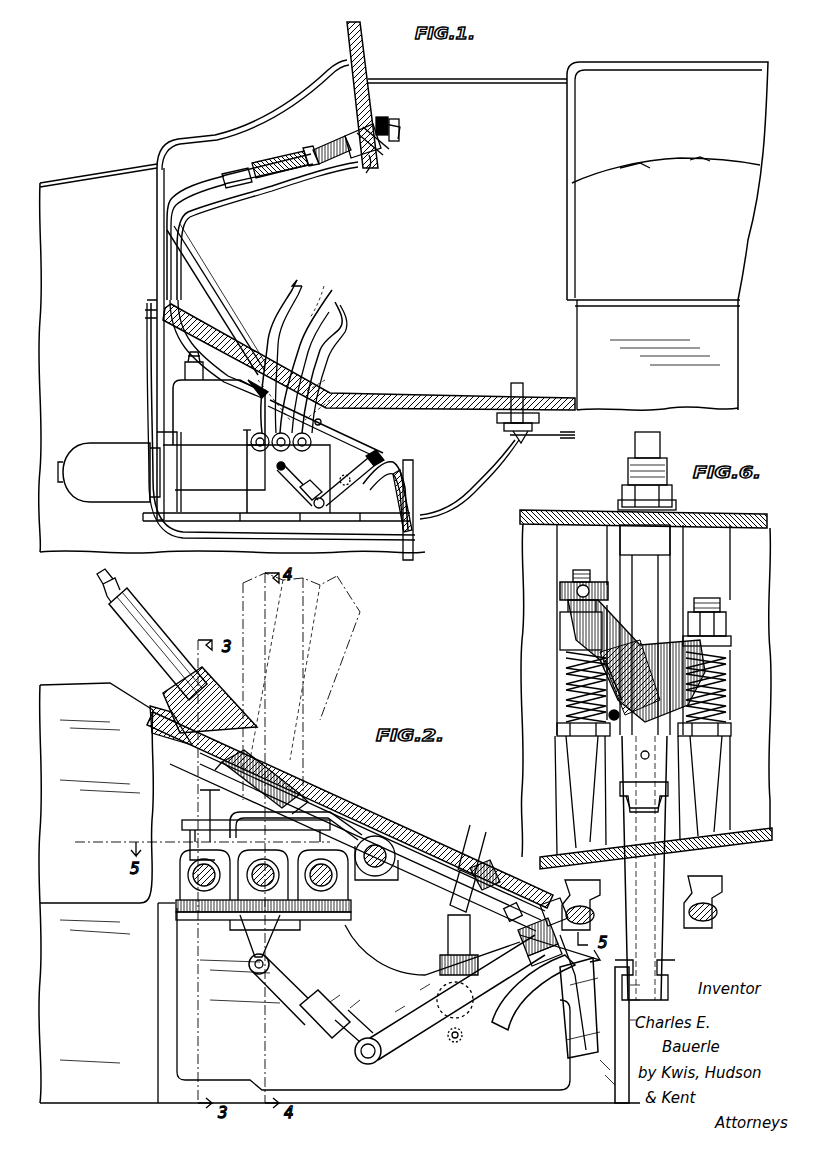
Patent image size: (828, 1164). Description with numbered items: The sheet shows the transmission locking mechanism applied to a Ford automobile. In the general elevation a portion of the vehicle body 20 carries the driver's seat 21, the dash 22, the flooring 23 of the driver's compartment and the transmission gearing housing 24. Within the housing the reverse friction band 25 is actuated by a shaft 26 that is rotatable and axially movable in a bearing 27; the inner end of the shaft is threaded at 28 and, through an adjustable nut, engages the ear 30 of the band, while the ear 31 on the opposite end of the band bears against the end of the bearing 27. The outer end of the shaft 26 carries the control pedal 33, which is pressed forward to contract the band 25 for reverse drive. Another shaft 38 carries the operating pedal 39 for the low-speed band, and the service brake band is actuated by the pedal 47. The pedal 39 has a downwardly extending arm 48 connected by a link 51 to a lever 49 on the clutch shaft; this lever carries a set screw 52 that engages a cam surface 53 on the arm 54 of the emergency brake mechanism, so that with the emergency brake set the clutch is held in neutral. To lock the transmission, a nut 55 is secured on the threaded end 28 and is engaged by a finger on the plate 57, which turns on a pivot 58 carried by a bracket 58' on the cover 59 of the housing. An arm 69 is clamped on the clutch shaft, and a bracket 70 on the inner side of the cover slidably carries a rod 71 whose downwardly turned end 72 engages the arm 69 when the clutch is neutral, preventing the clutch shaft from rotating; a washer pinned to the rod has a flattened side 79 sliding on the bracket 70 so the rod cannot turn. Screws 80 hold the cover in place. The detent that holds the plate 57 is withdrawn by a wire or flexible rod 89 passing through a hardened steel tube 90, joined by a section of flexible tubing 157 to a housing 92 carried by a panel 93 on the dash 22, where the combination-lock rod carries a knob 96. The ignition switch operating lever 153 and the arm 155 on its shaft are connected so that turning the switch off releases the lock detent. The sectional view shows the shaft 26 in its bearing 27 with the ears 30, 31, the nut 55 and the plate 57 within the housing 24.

In FIG. 1, the body of a motor vehicle 20 is at (313, 161).
In FIG. 1, the driver's seat 21 is at (652, 162).
In FIG. 1, the dash 22 is at (378, 100).
In FIG. 1, the flooring 23 is at (408, 398).
In FIG. 1, the transmission gearing case 24 is at (276, 436).
In FIG. 6, the transmission gearing case 24 is at (748, 846).
In FIG. 2, the transmission gearing case 24 is at (141, 939).
In FIG. 2, the reverse friction band 25 is at (188, 879).
In FIG. 6, the shaft 26 is at (566, 670).
In FIG. 6, the bearing 27 is at (556, 772).
In FIG. 6, the threaded inner end 28 is at (580, 572).
In FIG. 6, the ear 30 is at (562, 645).
In FIG. 6, the ear 31 is at (557, 730).
In FIG. 1, the control pedal 33 is at (342, 343).
In FIG. 2, the shaft 38 is at (240, 920).
In FIG. 1, the operating pedal 39 is at (288, 313).
In FIG. 1, the pedal 47 is at (308, 302).
In FIG. 1, the downwardly extending arm 48 is at (286, 471).
In FIG. 2, the downwardly extending arm 48 is at (268, 938).
In FIG. 1, the lever 49 is at (343, 483).
In FIG. 2, the lever 49 is at (415, 1005).
In FIG. 1, the link 51 is at (290, 488).
In FIG. 2, the link 51 is at (338, 1040).
In FIG. 1, the set screw 52 is at (372, 452).
In FIG. 2, the set screw 52 is at (522, 942).
In FIG. 2, the cam surface 53 is at (502, 1035).
In FIG. 1, the arm 54 is at (418, 455).
In FIG. 2, the arm 54 is at (580, 1008).
In FIG. 6, the nut 55 is at (560, 591).
In FIG. 6, the plate 57 is at (612, 690).
In FIG. 2, the plate 57 is at (182, 832).
In FIG. 6, the pivot 58 is at (636, 630).
In FIG. 2, the pivot 58 is at (170, 825).
In FIG. 2, the bracket 58' is at (235, 782).
In FIG. 1, the cover 59 is at (348, 432).
In FIG. 2, the cover 59 is at (413, 830).
In FIG. 2, the arm 69 is at (448, 944).
In FIG. 2, the bracket 70 is at (390, 872).
In FIG. 2, the rod 71 is at (466, 850).
In FIG. 2, the downwardly turned end 72 is at (508, 926).
In FIG. 6, the flattened side 79 is at (609, 713).
In FIG. 2, the flattened side 79 is at (228, 813).
In FIG. 6, the screws 80 is at (535, 862).
In FIG. 2, the screws 80 is at (165, 682).
In FIG. 6, the wire or flexible rod 89 is at (728, 672).
In FIG. 2, the wire or flexible rod 89 is at (100, 586).
In FIG. 1, the hardened steel tube 90 is at (196, 312).
In FIG. 2, the hardened steel tube 90 is at (125, 624).
In FIG. 1, the housing 92 is at (342, 144).
In FIG. 1, the panel 93 is at (388, 173).
In FIG. 1, the knob 96 is at (399, 131).
In FIG. 1, the operating lever 153 is at (392, 152).
In FIG. 1, the arm 155 is at (362, 170).
In FIG. 1, the flexible tubing 157 is at (268, 162).